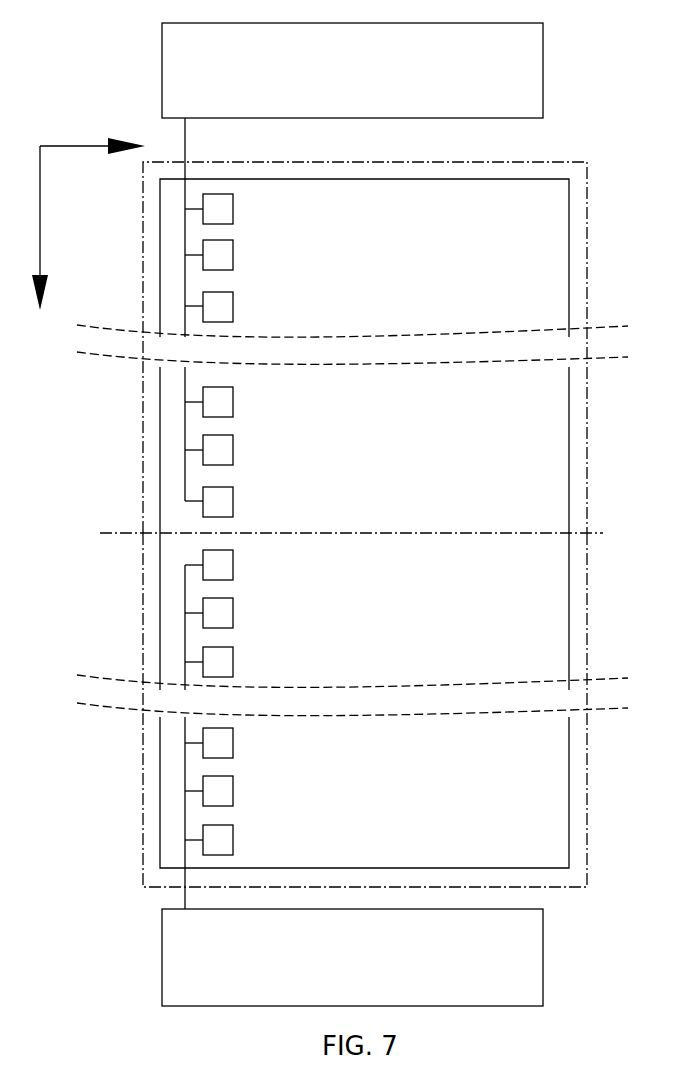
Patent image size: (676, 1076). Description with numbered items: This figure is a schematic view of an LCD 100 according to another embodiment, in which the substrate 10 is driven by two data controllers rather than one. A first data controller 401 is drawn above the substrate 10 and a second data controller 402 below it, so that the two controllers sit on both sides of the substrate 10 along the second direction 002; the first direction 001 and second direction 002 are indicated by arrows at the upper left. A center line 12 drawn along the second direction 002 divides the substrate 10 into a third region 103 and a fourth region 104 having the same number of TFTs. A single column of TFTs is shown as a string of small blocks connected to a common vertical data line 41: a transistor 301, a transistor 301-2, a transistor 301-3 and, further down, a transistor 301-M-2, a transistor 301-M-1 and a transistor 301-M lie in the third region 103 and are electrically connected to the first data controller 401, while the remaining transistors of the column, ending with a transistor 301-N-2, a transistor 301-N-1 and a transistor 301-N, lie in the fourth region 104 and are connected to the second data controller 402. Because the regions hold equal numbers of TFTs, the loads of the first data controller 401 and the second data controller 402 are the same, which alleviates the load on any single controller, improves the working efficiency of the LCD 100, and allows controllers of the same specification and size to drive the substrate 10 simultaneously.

The LCD 100 is at (108, 66).
The first direction 001 is at (92, 131).
The second direction 002 is at (45, 246).
The first data controller 401 is at (523, 90).
The second data controller 402 is at (517, 968).
The third region 103 is at (152, 435).
The fourth region 104 is at (150, 612).
The substrate 10 is at (537, 493).
The center line 12 is at (438, 533).
The data line 41 is at (183, 240).
The transistor 301 is at (220, 212).
The transistor 301-2 is at (220, 258).
The transistor 301-3 is at (218, 302).
The transistor 301-M-2 is at (221, 402).
The transistor 301-M-1 is at (220, 452).
The transistor 301-M is at (220, 503).
The transistor 301-N-2 is at (220, 745).
The transistor 301-N-1 is at (220, 793).
The transistor 301-N is at (220, 841).